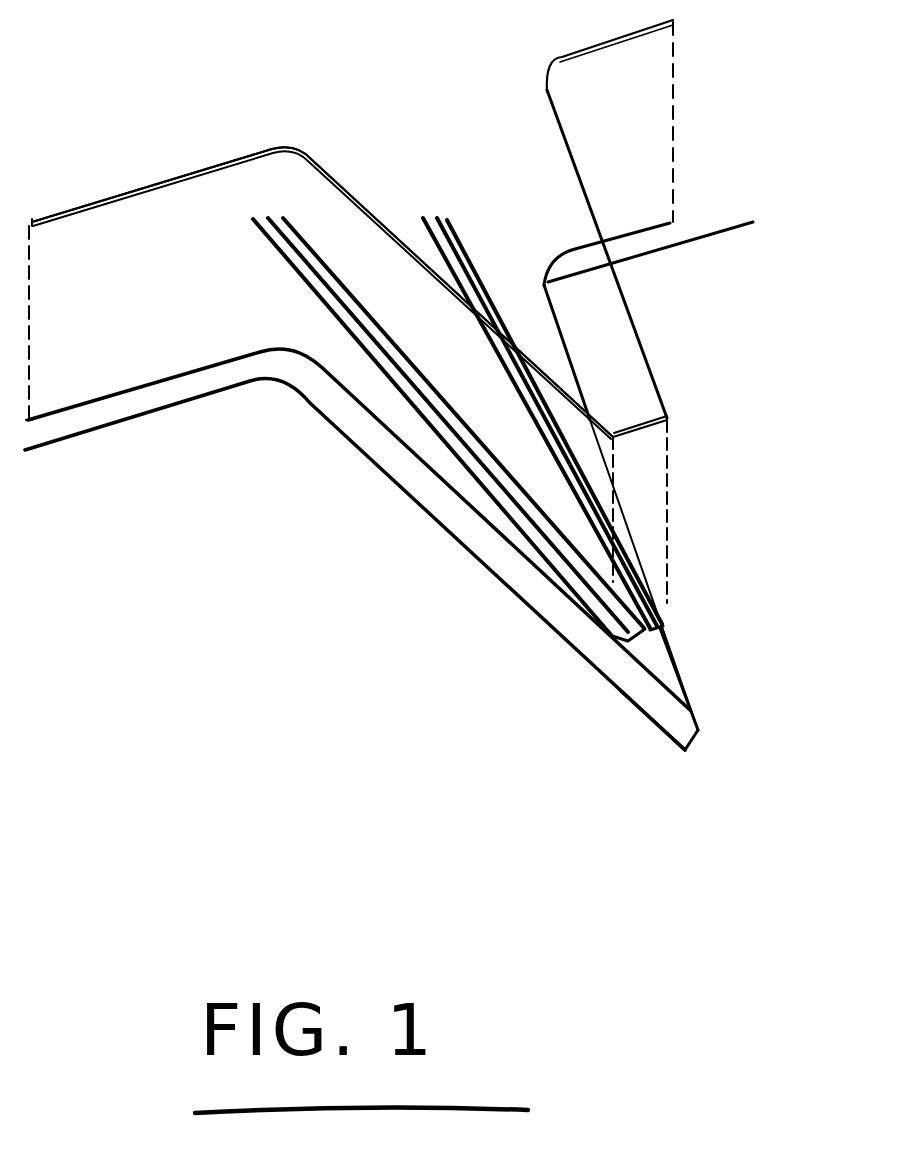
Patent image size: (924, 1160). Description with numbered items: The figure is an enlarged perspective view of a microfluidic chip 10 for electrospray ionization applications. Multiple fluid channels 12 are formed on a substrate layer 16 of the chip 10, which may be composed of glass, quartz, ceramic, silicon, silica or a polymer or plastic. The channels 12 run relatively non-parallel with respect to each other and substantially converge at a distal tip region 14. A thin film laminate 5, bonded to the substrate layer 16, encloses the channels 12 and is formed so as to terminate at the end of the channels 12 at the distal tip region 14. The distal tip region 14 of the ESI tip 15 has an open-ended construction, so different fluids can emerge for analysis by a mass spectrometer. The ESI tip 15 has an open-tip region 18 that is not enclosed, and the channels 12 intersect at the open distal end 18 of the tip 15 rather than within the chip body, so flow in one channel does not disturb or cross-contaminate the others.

The thin film laminate 5 is at (420, 116).
The microfluidic chip 10 is at (697, 283).
The fluid channels 12 is at (600, 525).
The distal tip region 14 is at (697, 580).
The ESI tip 15 is at (380, 453).
The substrate layer 16 is at (110, 297).
The open-tip region 18 is at (655, 672).